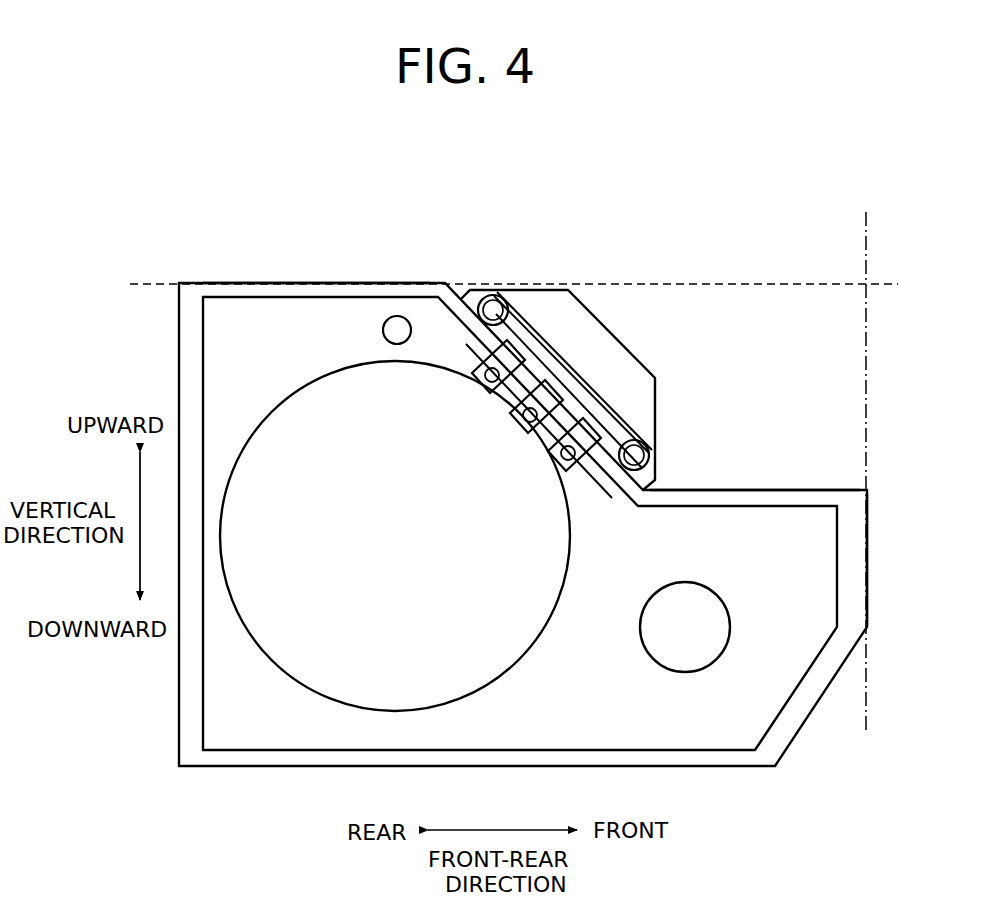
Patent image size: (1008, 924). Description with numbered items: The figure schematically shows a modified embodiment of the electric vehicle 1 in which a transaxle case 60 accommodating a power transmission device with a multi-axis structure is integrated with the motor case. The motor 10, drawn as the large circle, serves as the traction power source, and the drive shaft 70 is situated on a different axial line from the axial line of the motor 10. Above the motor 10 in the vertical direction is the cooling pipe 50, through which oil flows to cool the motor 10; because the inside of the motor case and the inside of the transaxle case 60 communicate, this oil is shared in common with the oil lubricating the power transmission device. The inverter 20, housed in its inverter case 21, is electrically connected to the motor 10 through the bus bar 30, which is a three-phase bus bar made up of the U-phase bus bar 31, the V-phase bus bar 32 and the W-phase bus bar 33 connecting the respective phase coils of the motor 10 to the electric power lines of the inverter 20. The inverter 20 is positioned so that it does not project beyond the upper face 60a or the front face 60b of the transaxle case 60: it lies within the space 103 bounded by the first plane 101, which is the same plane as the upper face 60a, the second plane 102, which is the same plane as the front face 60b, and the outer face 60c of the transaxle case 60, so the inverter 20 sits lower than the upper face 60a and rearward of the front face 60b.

The electric vehicle 1 is at (683, 203).
The motor 10 is at (342, 366).
The inverter 20 is at (651, 320).
The inverter case 21 is at (618, 344).
The bus bar 30 is at (590, 229).
The U-phase bus bar 31 is at (475, 371).
The V-phase bus bar 32 is at (527, 409).
The W-phase bus bar 33 is at (568, 444).
The cooling pipe 50 is at (392, 314).
The transaxle case 60 is at (208, 281).
The upper face of transaxle case 60a is at (247, 283).
The front face of transaxle case 60b is at (867, 565).
The outer face of transaxle case 60c is at (756, 490).
The drive shaft 70 is at (698, 658).
The first plane 101 is at (796, 283).
The second plane 102 is at (866, 418).
The space 103 is at (823, 333).